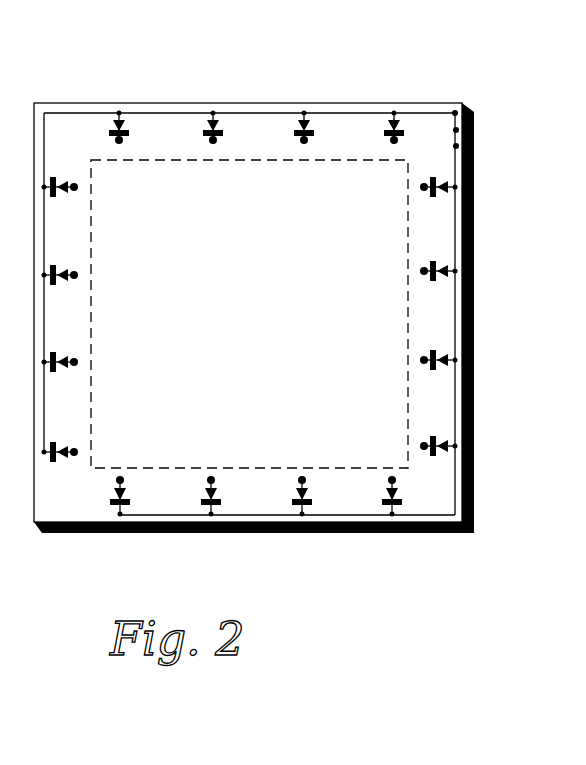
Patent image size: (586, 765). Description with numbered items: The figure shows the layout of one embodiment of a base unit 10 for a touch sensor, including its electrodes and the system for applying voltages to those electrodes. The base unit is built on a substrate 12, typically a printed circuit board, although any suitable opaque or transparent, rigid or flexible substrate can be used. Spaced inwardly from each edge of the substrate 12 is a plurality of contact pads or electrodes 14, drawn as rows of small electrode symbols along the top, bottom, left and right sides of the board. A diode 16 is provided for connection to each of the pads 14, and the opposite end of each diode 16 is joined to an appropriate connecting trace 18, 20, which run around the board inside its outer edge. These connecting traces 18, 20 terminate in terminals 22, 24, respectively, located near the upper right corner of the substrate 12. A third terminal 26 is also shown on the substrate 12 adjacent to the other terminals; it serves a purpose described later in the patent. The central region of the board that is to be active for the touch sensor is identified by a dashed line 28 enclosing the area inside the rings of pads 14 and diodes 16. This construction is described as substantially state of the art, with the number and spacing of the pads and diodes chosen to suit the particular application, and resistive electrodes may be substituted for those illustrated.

The base unit 10 is at (516, 261).
The substrate 12 is at (474, 298).
The contact pads or electrodes 14 is at (425, 363).
The diode 16 is at (437, 442).
The connecting trace 18 is at (318, 112).
The connecting trace 20 is at (436, 525).
The terminal 22 is at (456, 112).
The terminal 24 is at (457, 146).
The third terminal 26 is at (457, 130).
The dashed line 28 is at (408, 223).